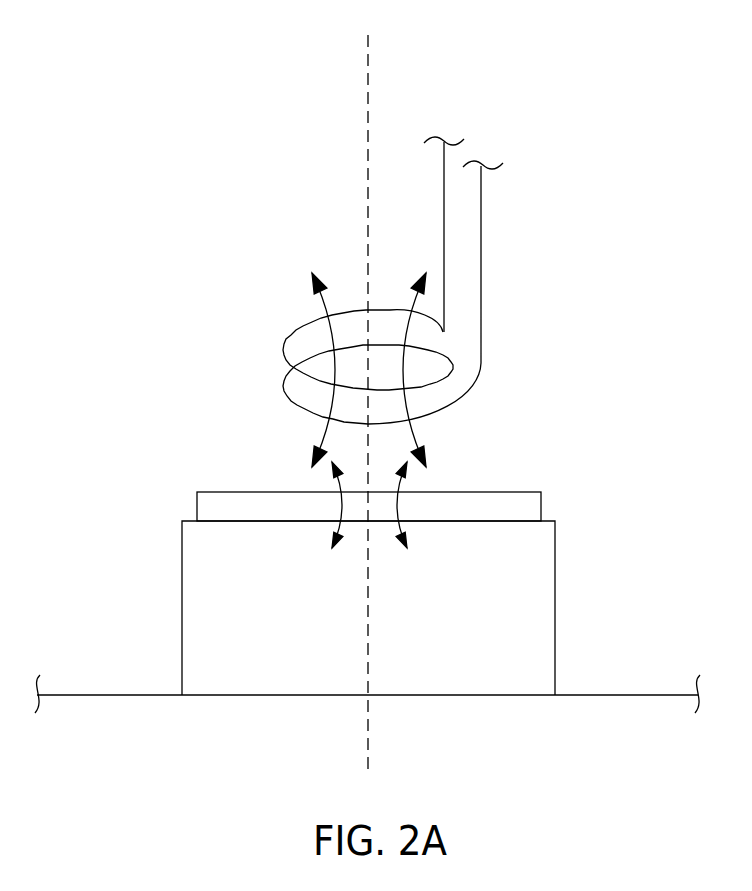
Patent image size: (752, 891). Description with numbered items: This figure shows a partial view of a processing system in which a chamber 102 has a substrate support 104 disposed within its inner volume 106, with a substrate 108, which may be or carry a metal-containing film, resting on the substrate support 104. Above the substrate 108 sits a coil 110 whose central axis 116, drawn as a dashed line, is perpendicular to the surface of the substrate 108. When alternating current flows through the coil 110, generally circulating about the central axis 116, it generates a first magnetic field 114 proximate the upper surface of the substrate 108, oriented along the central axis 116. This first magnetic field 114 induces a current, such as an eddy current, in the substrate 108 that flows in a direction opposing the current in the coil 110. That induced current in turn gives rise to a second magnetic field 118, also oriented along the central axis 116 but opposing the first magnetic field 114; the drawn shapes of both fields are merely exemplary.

The chamber 102 is at (643, 695).
The substrate support 104 is at (555, 570).
The inner volume 106 is at (101, 298).
The substrate 108 is at (541, 497).
The coil 110 is at (483, 207).
The first magnetic field 114 is at (410, 433).
The central axis 116 is at (368, 53).
The second magnetic field 118 is at (396, 509).